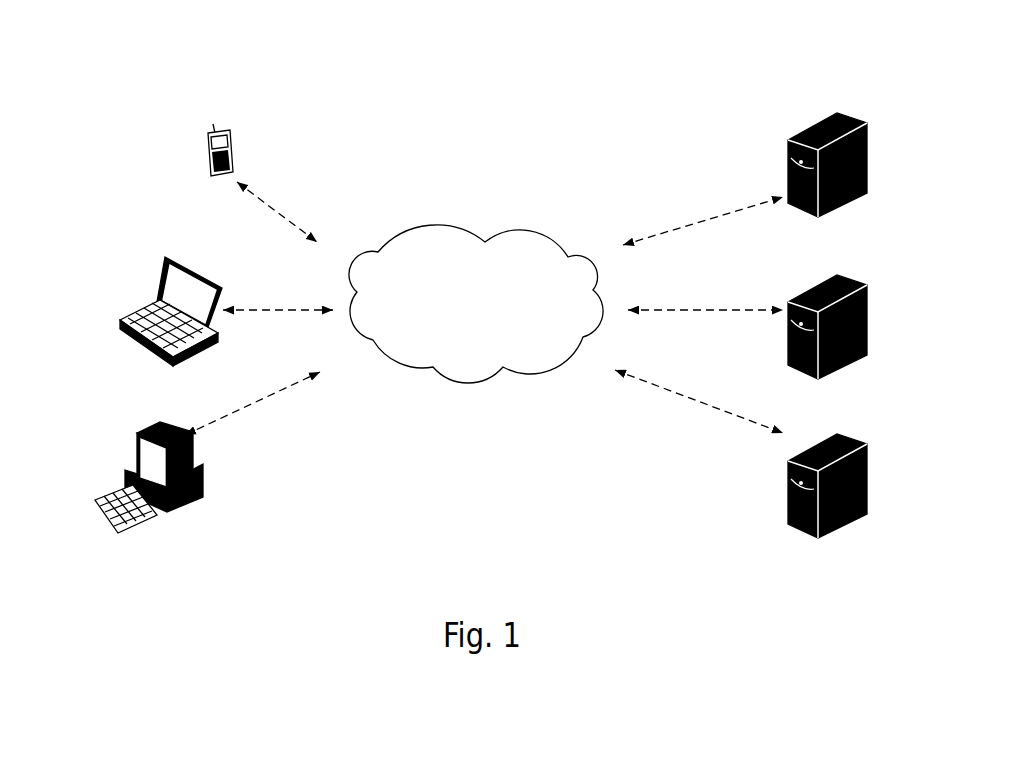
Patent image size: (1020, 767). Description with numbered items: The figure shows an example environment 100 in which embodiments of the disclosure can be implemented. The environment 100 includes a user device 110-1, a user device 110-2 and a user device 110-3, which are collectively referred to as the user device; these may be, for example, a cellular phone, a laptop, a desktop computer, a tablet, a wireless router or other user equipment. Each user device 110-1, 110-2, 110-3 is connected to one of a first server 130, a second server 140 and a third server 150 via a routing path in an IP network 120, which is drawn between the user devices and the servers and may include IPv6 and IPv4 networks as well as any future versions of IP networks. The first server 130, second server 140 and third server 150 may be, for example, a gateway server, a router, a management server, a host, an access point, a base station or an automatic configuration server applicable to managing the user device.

The environment 100 is at (165, 55).
The user device 110-1 is at (197, 142).
The user device 110-2 is at (152, 270).
The user device 110-3 is at (122, 455).
The IP network 120 is at (448, 215).
The first server 130 is at (850, 115).
The second server 140 is at (852, 283).
The third server 150 is at (855, 446).